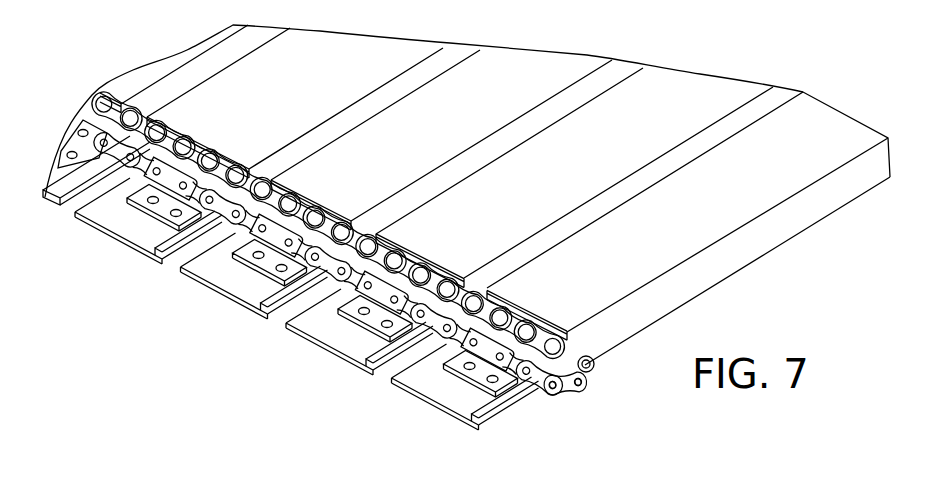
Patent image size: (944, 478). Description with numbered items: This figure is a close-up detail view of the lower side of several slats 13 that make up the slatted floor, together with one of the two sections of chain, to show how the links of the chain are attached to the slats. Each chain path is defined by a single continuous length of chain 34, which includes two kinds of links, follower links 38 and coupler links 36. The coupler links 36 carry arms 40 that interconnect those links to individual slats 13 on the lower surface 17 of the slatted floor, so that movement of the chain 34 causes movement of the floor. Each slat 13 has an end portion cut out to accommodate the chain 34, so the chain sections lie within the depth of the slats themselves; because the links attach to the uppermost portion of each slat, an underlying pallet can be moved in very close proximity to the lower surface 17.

The slat 13 is at (818, 118).
The lower surface 17 is at (490, 117).
The chain 34 is at (580, 386).
The coupler link 36 is at (207, 157).
The follower link 38 is at (277, 185).
The arm 40 is at (143, 201).